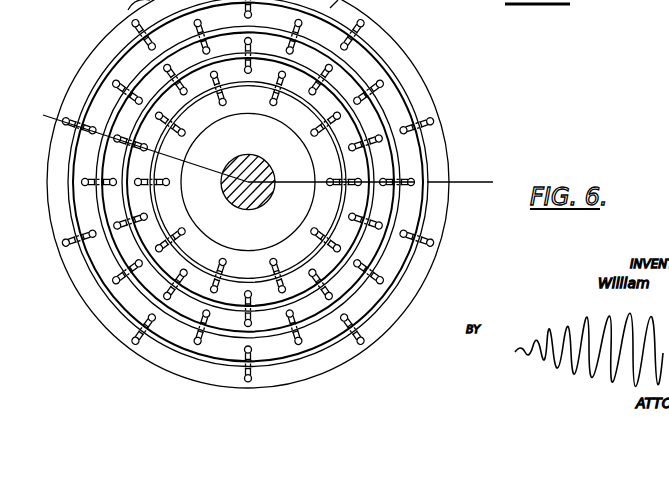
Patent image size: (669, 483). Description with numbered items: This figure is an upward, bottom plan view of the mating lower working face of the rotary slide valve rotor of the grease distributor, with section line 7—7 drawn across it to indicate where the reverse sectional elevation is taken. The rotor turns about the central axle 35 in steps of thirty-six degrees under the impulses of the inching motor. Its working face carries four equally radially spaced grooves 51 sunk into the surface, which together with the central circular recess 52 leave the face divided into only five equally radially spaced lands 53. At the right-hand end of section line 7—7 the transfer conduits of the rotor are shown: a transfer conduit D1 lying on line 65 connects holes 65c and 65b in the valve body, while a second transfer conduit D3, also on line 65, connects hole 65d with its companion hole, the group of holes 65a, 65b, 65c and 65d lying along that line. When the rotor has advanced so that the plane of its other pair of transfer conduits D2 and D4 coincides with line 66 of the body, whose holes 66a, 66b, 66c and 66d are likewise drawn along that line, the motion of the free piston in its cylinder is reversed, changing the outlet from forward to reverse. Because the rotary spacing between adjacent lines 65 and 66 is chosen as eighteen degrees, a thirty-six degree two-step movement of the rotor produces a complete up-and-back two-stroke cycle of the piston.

The section line 7— 7 is at (482, 165).
The axle 35 is at (262, 189).
The grooves 51 is at (247, 191).
The circular recess 52 is at (258, 141).
The lands 53 is at (397, 47).
The line 65 is at (430, 123).
The hole 65a is at (444, 114).
The hole 65b is at (347, 150).
The hole 65c is at (371, 146).
The hole 65d is at (402, 134).
The line 66 is at (491, 181).
The hole 66a is at (324, 184).
The hole 66b is at (416, 179).
The hole 66c is at (383, 186).
The hole 66d is at (355, 186).
The transfer conduit D1 is at (370, 138).
The transfer conduit D2 is at (405, 186).
The second transfer conduit D3 is at (419, 117).
The transfer conduit D4 is at (327, 186).